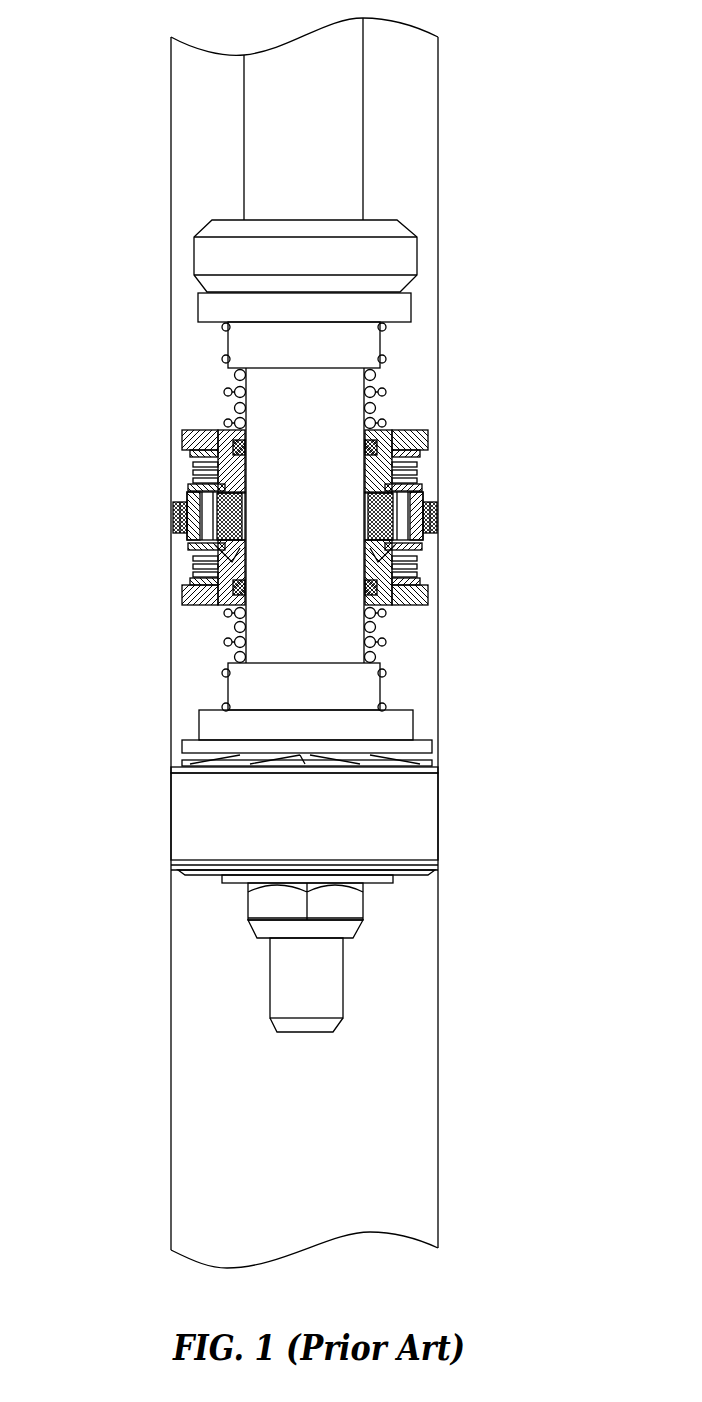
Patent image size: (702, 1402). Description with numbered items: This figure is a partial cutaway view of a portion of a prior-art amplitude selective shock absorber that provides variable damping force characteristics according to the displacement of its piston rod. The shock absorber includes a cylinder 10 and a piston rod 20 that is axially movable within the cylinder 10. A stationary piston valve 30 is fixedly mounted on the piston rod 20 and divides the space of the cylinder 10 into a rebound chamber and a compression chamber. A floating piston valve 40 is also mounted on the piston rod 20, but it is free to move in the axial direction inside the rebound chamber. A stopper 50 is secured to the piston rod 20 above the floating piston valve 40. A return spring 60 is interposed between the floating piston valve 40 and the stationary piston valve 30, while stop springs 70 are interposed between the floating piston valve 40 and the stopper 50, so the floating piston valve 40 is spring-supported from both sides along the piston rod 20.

The cylinder 10 is at (438, 313).
The piston rod 20 is at (353, 153).
The stationary piston valve 30 is at (425, 813).
The floating piston valve 40 is at (176, 477).
The stopper 50 is at (410, 255).
The return spring 60 is at (387, 362).
The stop springs 70 is at (373, 378).